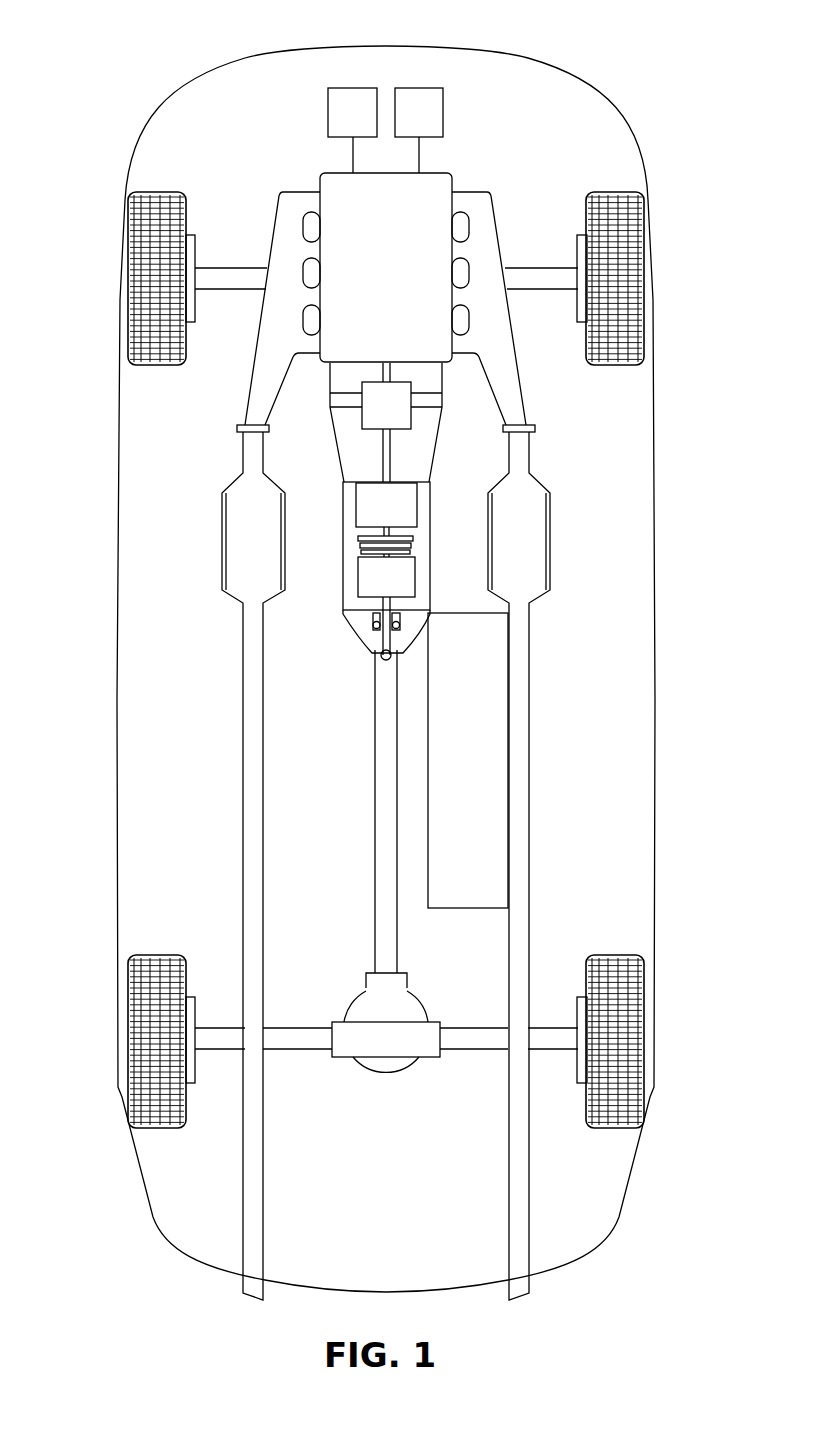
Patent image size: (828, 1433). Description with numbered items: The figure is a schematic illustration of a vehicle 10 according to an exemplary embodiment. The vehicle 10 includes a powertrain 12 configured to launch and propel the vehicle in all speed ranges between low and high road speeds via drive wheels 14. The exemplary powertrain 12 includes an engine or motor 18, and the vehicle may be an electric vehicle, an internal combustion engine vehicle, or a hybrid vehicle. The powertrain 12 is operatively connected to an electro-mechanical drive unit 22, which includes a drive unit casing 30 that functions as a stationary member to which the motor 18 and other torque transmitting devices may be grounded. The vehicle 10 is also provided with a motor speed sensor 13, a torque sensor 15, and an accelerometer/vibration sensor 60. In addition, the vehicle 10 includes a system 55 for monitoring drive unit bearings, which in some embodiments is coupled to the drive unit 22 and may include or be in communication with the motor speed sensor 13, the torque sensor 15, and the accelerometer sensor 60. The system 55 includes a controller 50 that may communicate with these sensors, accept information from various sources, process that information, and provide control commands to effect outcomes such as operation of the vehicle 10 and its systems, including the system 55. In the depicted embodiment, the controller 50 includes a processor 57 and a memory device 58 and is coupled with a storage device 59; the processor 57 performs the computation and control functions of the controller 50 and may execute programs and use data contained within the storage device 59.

The vehicle 10 is at (97, 17).
The powertrain 12 is at (348, 578).
The motor speed sensor 13 is at (432, 127).
The drive wheels 14 is at (160, 288).
The torque sensor 15 is at (365, 127).
The engine or motor 18 is at (338, 637).
The electro-mechanical drive unit 22 is at (450, 430).
The drive unit casing 30 is at (343, 506).
The controller 50 is at (480, 660).
The system for monitoring drive unit bearings 55 is at (480, 718).
The processor 57 is at (480, 775).
The memory device 58 is at (480, 830).
The storage device 59 is at (480, 887).
The accelerometer/vibration sensor 60 is at (399, 419).